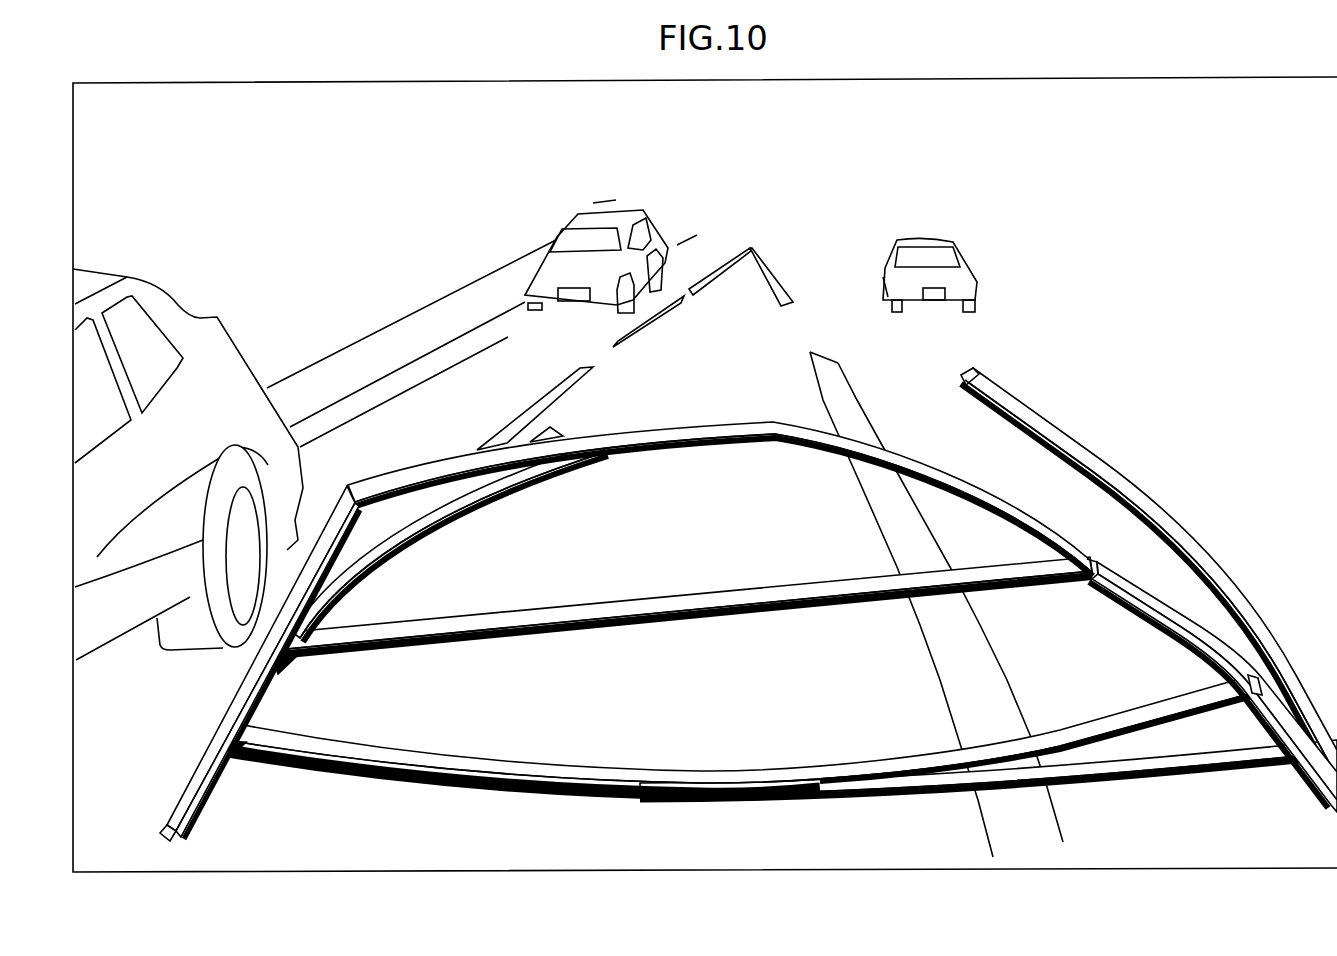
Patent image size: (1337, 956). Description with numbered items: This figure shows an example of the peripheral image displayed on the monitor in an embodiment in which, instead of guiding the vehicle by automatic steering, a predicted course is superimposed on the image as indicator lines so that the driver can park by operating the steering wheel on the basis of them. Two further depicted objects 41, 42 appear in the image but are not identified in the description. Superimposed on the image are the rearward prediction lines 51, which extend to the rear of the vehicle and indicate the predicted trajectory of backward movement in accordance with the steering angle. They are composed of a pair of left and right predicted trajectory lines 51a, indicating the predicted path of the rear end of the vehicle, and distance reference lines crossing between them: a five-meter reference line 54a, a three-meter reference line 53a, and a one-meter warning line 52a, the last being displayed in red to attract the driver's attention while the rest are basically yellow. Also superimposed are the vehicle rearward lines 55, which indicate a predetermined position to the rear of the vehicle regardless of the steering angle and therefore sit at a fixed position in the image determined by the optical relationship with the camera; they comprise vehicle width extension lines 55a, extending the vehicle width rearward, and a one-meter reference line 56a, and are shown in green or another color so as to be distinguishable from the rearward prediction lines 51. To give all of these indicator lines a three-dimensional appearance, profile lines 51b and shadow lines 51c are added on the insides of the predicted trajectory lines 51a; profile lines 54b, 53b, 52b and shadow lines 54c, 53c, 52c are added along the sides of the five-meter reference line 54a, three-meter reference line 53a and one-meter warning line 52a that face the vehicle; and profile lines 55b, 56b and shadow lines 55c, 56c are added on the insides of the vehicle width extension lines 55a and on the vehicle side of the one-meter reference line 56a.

The own vehicle 41 is at (172, 331).
The other vehicle 42 is at (577, 232).
The rearward prediction lines 51 is at (718, 608).
The predicted trajectory lines 51a is at (193, 785).
The profile lines 51b is at (190, 812).
The shadow lines 51c is at (203, 796).
The 1 m warning line 52a is at (877, 767).
The profile lines 52b is at (1068, 744).
The shadow lines 52c is at (1147, 727).
The 3 m reference line 53a is at (645, 600).
The profile lines 53b is at (682, 608).
The shadow lines 53c is at (765, 612).
The 5 m reference line 54a is at (681, 426).
The profile lines 54b is at (575, 452).
The shadow lines 54c is at (743, 447).
The vehicle rearward lines 55 is at (814, 554).
The vehicle width extension lines 55a is at (408, 528).
The profile lines 55b is at (458, 507).
The shadow lines 55c is at (412, 552).
The 1 m reference line 56a is at (1083, 770).
The profile lines 56b is at (1157, 765).
The shadow lines 56c is at (1237, 763).